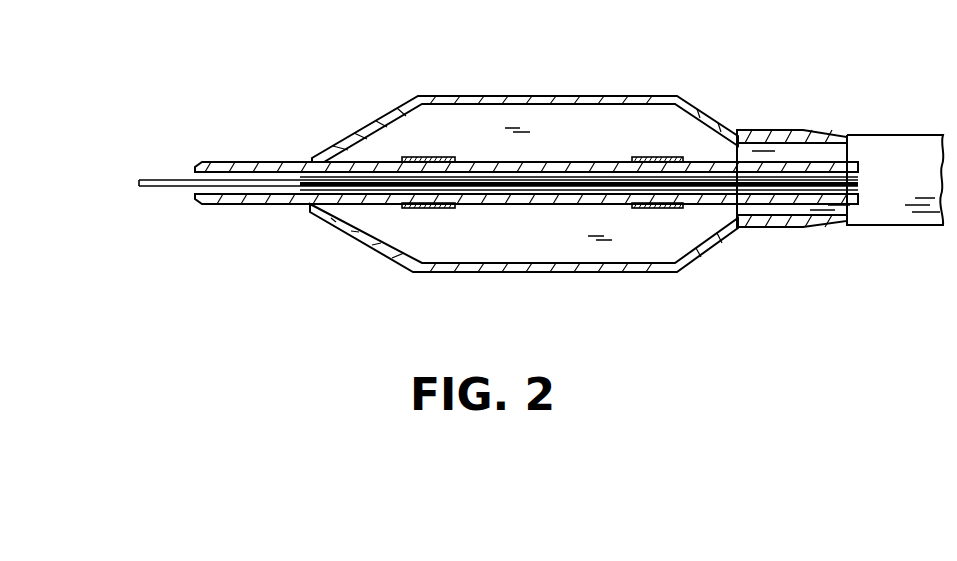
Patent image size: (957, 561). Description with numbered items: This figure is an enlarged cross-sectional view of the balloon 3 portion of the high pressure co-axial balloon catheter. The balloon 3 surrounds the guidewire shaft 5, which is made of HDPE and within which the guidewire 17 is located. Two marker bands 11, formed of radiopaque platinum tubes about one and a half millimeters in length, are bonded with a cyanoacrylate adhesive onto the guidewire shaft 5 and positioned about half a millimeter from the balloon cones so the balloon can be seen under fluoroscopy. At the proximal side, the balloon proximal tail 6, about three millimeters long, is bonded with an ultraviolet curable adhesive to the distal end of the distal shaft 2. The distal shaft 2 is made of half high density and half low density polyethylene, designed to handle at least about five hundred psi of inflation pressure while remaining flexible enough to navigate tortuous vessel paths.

The distal shaft 2 is at (897, 137).
The balloon 3 is at (491, 98).
The guidewire shaft 5 is at (596, 162).
The balloon proximal tail 6 is at (773, 131).
The marker bands 11 is at (433, 210).
The guidewire 17 is at (153, 181).